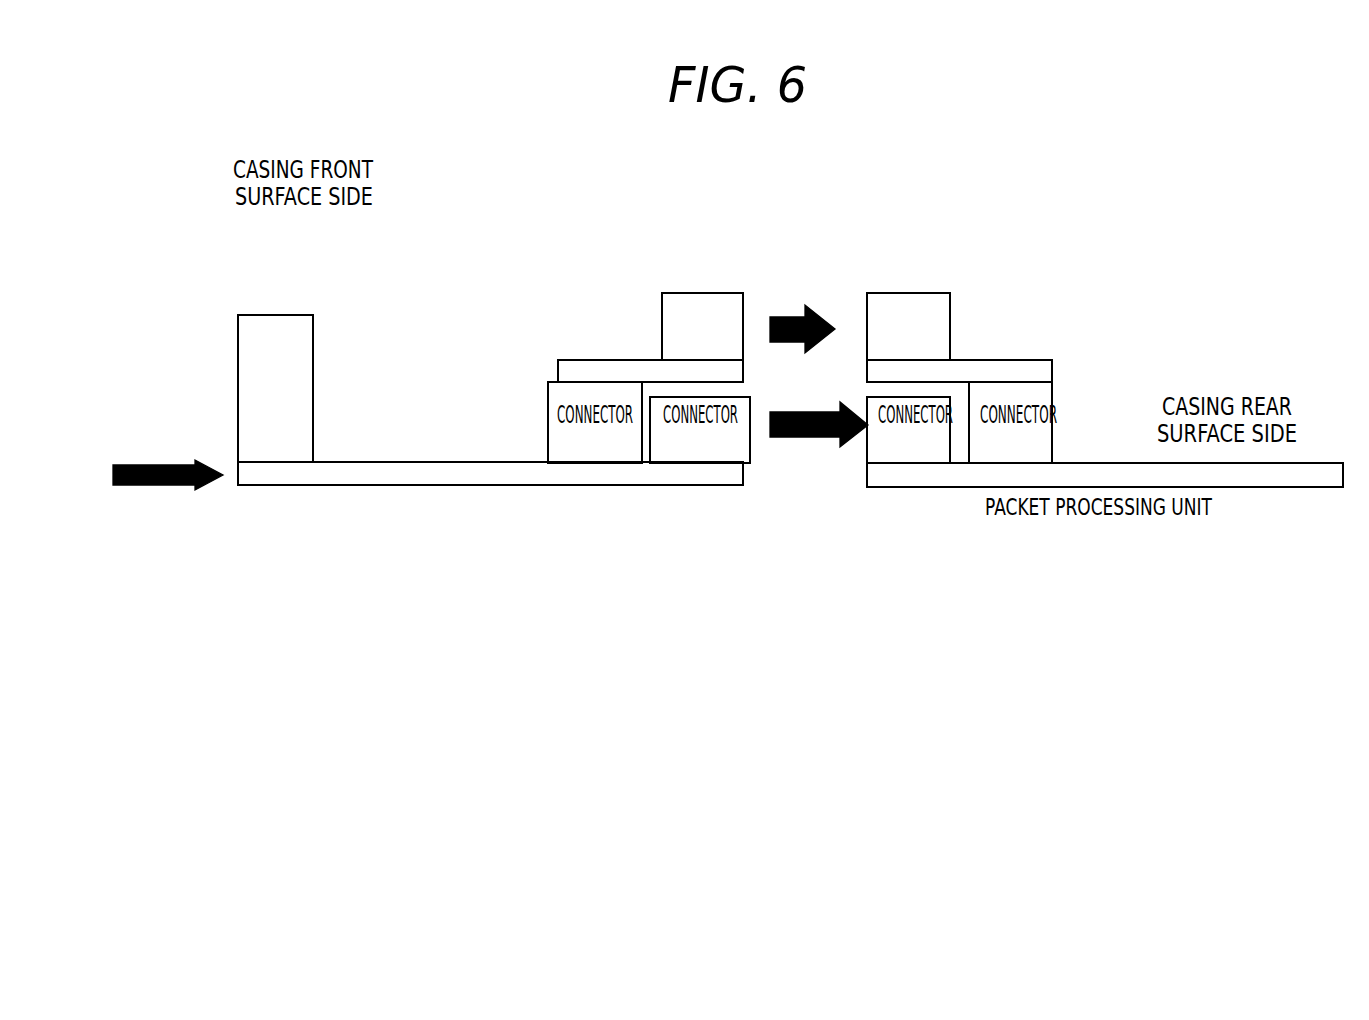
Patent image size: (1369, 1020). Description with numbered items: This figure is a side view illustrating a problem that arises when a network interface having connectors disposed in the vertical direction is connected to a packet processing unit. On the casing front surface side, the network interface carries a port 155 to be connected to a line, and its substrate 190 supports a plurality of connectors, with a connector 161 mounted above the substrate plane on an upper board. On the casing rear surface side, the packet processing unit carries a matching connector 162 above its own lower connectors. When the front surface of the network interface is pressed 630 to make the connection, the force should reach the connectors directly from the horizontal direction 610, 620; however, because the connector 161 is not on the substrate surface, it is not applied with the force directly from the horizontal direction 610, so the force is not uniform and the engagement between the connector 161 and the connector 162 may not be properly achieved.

The port 155 is at (272, 330).
The connector 161 is at (690, 292).
The connector 162 is at (903, 293).
The switch control table 190 is at (462, 470).
The horizontal direction force 610 is at (792, 317).
The horizontal direction force 620 is at (792, 437).
The pressing of front surface 630 is at (165, 485).